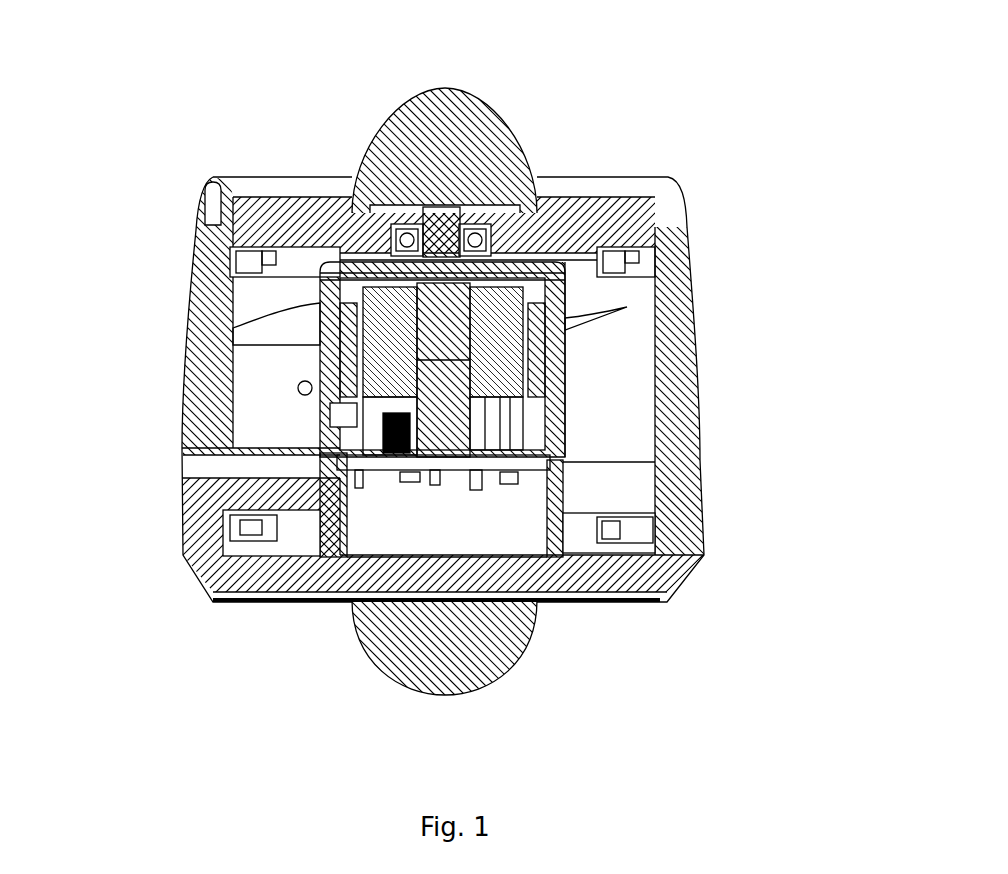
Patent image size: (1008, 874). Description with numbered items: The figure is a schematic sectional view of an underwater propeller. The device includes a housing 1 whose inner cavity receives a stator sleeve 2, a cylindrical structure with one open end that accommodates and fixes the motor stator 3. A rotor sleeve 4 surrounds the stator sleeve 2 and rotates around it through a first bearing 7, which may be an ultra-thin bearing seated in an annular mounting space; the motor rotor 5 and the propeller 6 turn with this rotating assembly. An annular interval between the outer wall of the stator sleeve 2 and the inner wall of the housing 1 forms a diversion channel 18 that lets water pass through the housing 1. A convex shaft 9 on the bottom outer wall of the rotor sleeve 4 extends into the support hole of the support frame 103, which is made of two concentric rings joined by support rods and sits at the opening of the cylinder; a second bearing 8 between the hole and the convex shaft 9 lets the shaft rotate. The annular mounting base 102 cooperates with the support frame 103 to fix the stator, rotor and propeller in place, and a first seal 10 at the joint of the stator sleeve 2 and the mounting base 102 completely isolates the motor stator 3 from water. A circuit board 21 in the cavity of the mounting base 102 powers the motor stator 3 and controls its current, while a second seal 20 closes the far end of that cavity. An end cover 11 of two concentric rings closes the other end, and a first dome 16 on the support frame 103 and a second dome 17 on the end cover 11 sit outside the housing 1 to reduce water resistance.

The housing 1 is at (215, 375).
The stator sleeve 2 is at (448, 317).
The motor stator 3 is at (507, 348).
The rotor sleeve 4 is at (565, 372).
The motor rotor 5 is at (347, 373).
The propeller 6 is at (265, 325).
The first bearing 7 is at (347, 417).
The second bearing 8 is at (393, 223).
The convex shaft 9 is at (468, 207).
The first seal 10 is at (443, 440).
The end cover 11 is at (688, 575).
The first dome 16 is at (470, 110).
The second dome 17 is at (493, 667).
The diversion channel 18 is at (608, 440).
The second seal 20 is at (522, 553).
The circuit board 21 is at (445, 510).
The mounting base 102 is at (327, 530).
The support frame 103 is at (677, 190).